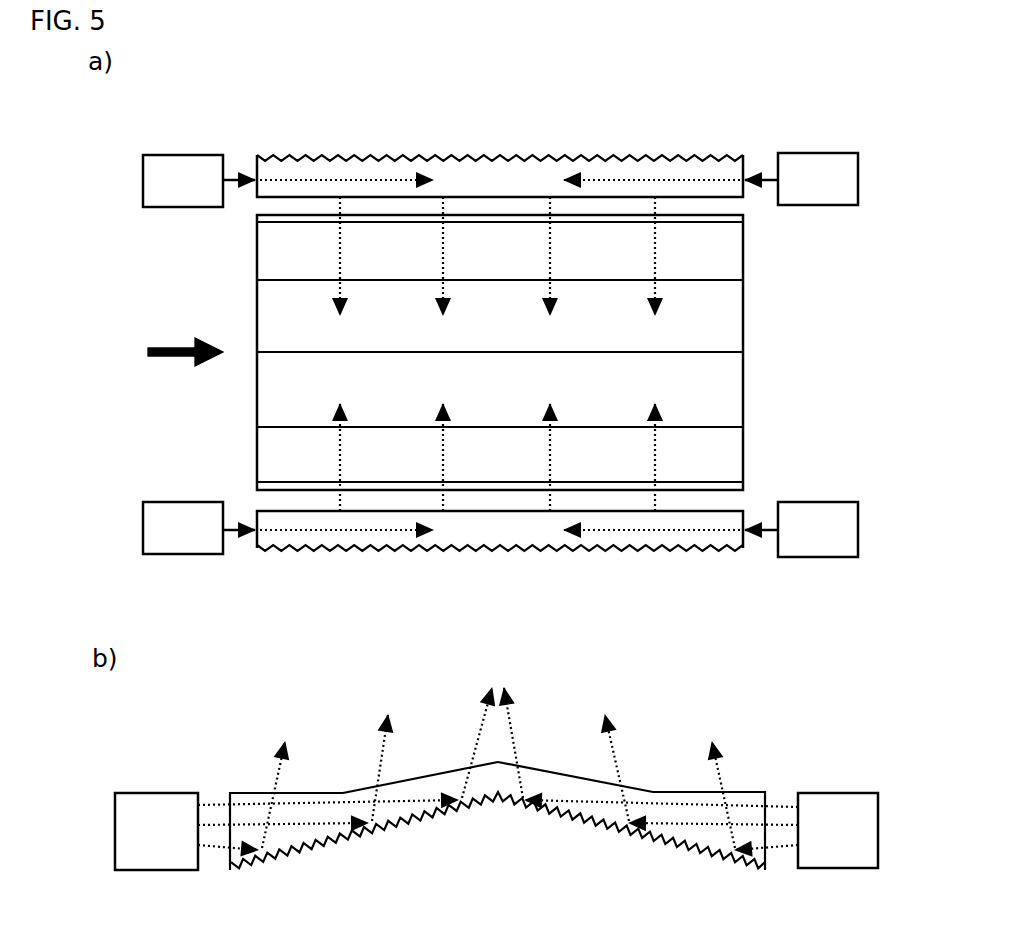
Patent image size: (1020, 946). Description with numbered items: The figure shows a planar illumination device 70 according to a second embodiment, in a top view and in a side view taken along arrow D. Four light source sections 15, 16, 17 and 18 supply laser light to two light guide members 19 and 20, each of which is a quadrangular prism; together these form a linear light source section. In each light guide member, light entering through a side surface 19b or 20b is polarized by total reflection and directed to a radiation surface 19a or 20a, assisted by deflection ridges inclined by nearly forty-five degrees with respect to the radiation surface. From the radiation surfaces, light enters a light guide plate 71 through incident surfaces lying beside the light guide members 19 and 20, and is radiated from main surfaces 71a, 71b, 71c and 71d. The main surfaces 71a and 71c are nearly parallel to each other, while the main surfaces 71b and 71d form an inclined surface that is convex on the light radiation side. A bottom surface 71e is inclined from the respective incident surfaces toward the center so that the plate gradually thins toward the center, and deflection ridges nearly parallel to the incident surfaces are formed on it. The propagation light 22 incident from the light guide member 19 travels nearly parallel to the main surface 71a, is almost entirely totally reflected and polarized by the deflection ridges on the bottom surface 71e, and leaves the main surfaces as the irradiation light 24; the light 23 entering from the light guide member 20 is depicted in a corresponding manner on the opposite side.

The planar illumination device 70 is at (205, 117).
The light source section 16 is at (160, 180).
The light source section 15 is at (806, 170).
The light source section 18 is at (177, 520).
The light source section 17 is at (808, 520).
The light guide member 19 is at (487, 176).
The radiation surface 19a is at (278, 198).
The side surface 19b is at (515, 156).
The light guide member 20 is at (470, 533).
The radiation surface 20a is at (265, 508).
The side surface 20b is at (497, 548).
The light guide plate 71 is at (245, 317).
The main surface 71a is at (713, 252).
The main surface 71b is at (705, 328).
The main surface 71c is at (715, 458).
The main surface 71d is at (712, 400).
The bottom surface 71e is at (658, 840).
The propagation light 22 is at (552, 243).
The light from second light guide 23 is at (550, 448).
The irradiation light 24 is at (487, 742).